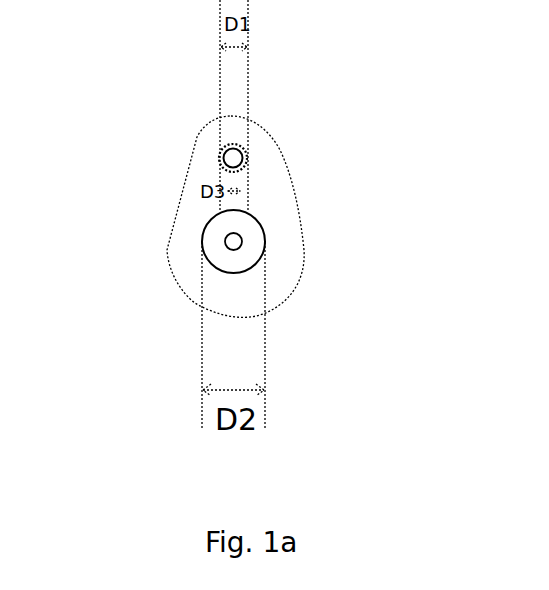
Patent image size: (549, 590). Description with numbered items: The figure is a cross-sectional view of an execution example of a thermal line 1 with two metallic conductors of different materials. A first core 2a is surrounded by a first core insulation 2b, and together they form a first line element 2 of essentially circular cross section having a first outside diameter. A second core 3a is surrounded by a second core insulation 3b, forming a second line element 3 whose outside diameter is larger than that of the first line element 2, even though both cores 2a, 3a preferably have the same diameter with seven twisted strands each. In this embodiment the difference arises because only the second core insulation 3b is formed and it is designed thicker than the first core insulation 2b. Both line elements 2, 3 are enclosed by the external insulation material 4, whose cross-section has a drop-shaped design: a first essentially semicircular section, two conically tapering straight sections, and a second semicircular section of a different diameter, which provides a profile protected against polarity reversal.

The thermal line 1 is at (128, 140).
The first line element 2 is at (256, 166).
The first core 2a is at (244, 151).
The first core insulation 2b is at (236, 156).
The second line element 3 is at (268, 270).
The second core 3a is at (243, 240).
The second core insulation 3b is at (241, 261).
The external insulation material 4 is at (167, 247).